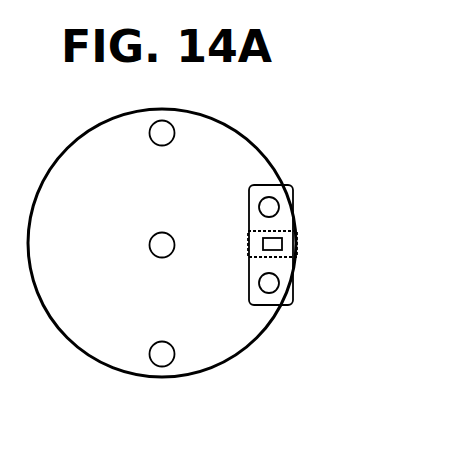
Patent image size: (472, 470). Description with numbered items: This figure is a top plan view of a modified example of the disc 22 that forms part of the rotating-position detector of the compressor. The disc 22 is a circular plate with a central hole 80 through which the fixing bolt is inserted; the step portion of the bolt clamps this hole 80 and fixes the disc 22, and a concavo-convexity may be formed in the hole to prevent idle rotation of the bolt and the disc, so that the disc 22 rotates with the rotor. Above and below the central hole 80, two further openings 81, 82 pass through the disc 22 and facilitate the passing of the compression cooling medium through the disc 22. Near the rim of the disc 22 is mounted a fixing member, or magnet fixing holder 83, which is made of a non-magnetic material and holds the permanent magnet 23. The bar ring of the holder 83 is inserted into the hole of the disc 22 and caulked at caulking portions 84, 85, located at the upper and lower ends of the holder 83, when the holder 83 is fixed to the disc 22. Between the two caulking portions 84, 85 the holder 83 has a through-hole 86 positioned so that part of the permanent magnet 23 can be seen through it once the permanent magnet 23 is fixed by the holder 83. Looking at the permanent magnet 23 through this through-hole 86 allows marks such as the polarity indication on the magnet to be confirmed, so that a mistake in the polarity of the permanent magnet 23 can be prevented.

The disc 22 is at (83, 148).
The hole 80 is at (156, 234).
The opening 81 is at (170, 126).
The opening 82 is at (172, 362).
The fixing member (magnet fixing holder) 83 is at (285, 218).
The caulking portion 84 is at (272, 206).
The caulking portion 85 is at (276, 288).
The through-hole 86 is at (292, 244).
The permanent magnet 23 is at (282, 247).